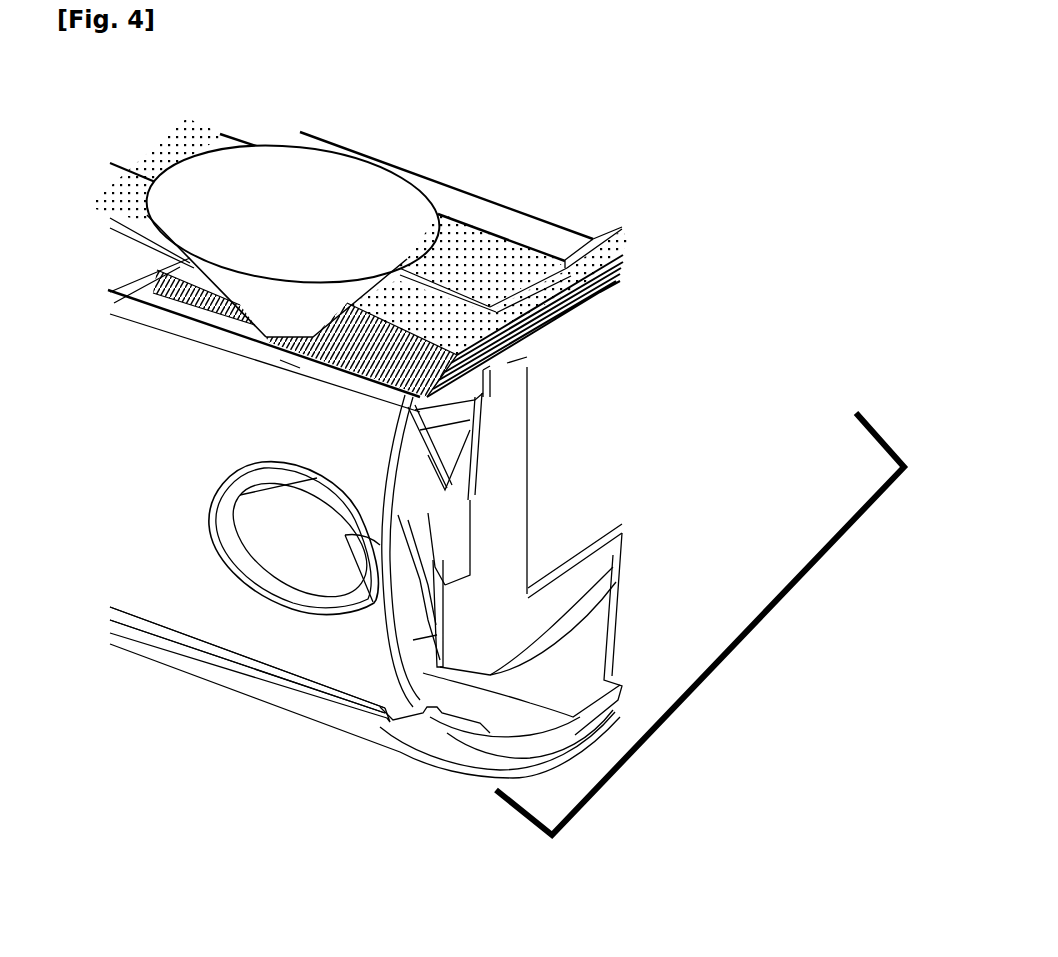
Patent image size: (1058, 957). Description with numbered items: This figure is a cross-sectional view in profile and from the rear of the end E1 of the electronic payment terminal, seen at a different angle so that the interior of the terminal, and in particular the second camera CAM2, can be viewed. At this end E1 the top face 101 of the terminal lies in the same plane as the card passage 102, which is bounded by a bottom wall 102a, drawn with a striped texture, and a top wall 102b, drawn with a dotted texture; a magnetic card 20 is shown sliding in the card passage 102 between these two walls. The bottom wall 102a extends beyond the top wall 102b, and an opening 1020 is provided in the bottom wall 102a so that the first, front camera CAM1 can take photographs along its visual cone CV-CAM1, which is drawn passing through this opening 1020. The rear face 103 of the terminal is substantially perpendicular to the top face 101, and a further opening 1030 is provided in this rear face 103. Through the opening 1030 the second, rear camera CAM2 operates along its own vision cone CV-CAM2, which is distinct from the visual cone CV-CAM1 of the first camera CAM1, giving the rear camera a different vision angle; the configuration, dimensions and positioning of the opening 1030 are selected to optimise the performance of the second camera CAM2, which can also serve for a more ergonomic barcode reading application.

The top face 101 is at (527, 198).
The card passage 102 is at (492, 341).
The bottom wall 102a is at (632, 264).
The top wall 102b is at (632, 238).
The opening 1020 is at (272, 339).
The magnetic card 20 is at (127, 270).
The visual cone of the first camera CV-CAM1 is at (290, 165).
The first camera CAM1 is at (290, 368).
The second camera CAM2 is at (416, 477).
The vision cone of the second camera CV-CAM2 is at (310, 547).
The rear face 103 is at (297, 642).
The opening 1030 is at (227, 580).
The end E1 is at (700, 624).